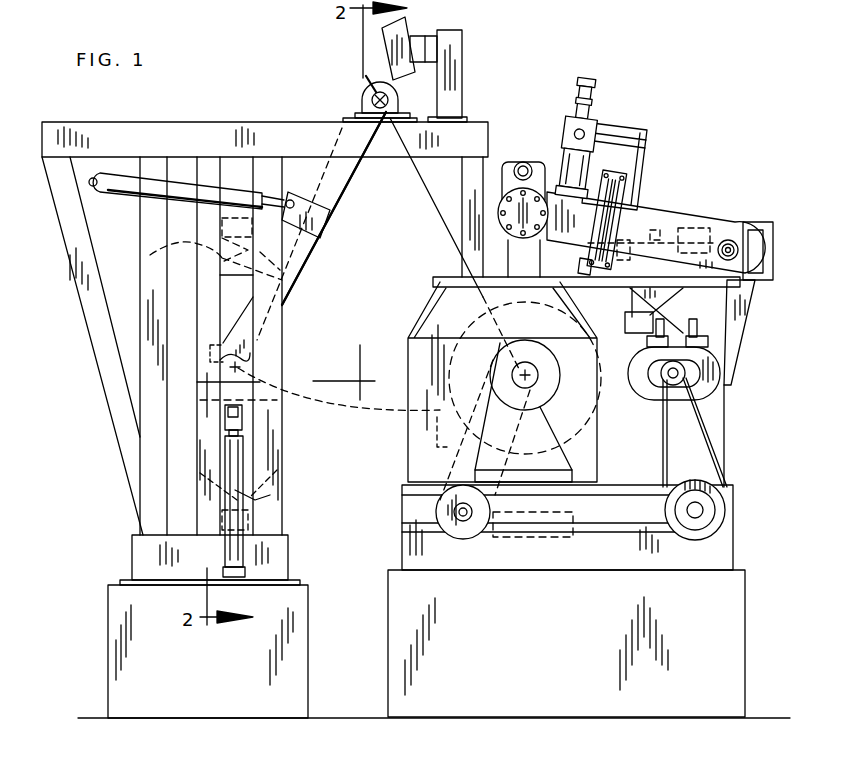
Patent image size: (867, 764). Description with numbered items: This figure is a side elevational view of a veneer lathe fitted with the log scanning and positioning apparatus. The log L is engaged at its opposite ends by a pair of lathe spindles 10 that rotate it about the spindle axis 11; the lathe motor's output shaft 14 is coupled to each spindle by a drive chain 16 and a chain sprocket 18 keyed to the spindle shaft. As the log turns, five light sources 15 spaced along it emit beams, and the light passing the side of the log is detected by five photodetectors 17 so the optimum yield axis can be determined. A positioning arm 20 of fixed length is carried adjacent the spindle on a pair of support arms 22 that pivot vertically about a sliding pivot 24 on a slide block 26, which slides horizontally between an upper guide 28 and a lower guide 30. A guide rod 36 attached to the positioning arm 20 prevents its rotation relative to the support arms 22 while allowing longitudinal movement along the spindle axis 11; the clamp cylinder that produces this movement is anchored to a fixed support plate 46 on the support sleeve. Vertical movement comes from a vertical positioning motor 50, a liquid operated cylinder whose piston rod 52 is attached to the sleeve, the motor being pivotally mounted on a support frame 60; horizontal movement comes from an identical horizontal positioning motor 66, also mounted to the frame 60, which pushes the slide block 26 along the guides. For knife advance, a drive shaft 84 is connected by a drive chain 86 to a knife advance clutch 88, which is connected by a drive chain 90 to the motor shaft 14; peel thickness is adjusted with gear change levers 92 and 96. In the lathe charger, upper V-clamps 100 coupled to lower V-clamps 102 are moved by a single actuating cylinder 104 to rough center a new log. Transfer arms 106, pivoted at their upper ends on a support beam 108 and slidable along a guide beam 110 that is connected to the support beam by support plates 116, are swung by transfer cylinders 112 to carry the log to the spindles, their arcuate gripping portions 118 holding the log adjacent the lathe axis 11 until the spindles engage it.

The lathe spindles 10 is at (548, 362).
The spindle axis 11 is at (540, 383).
The output shaft 14 is at (455, 512).
The light sources 15 is at (568, 540).
The drive chain 16 is at (557, 440).
The photodetectors 17 is at (382, 47).
The chain sprocket 18 is at (492, 357).
The positioning arm 20 is at (540, 268).
The support arms 22 is at (660, 222).
The sliding pivot 24 is at (728, 240).
The slide block 26 is at (747, 270).
The upper guide 28 is at (760, 222).
The lower guide 30 is at (758, 288).
The guide rod 36 is at (523, 162).
The support plate 46 is at (500, 213).
The vertical positioning motor 50 is at (572, 98).
The piston rod 52 is at (560, 188).
The support frame 60 is at (623, 123).
The horizontal positioning motor 66 is at (652, 234).
The drive shaft 84 is at (676, 386).
The drive chain 86 is at (712, 436).
The knife advance clutch 88 is at (705, 512).
The drive chain 90 is at (628, 492).
The gear change lever 92 is at (640, 310).
The gear change lever 96 is at (693, 326).
The upper V-clamps 100 is at (152, 255).
The lower V-clamps 102 is at (257, 497).
The actuating cylinder 104 is at (250, 546).
The transfer arms 106 is at (303, 263).
The support beam 108 is at (372, 100).
The guide beam 110 is at (330, 215).
The transfer cylinders 112 is at (125, 193).
The support plates 116 is at (357, 180).
The arcuate gripping portions 118 is at (223, 343).